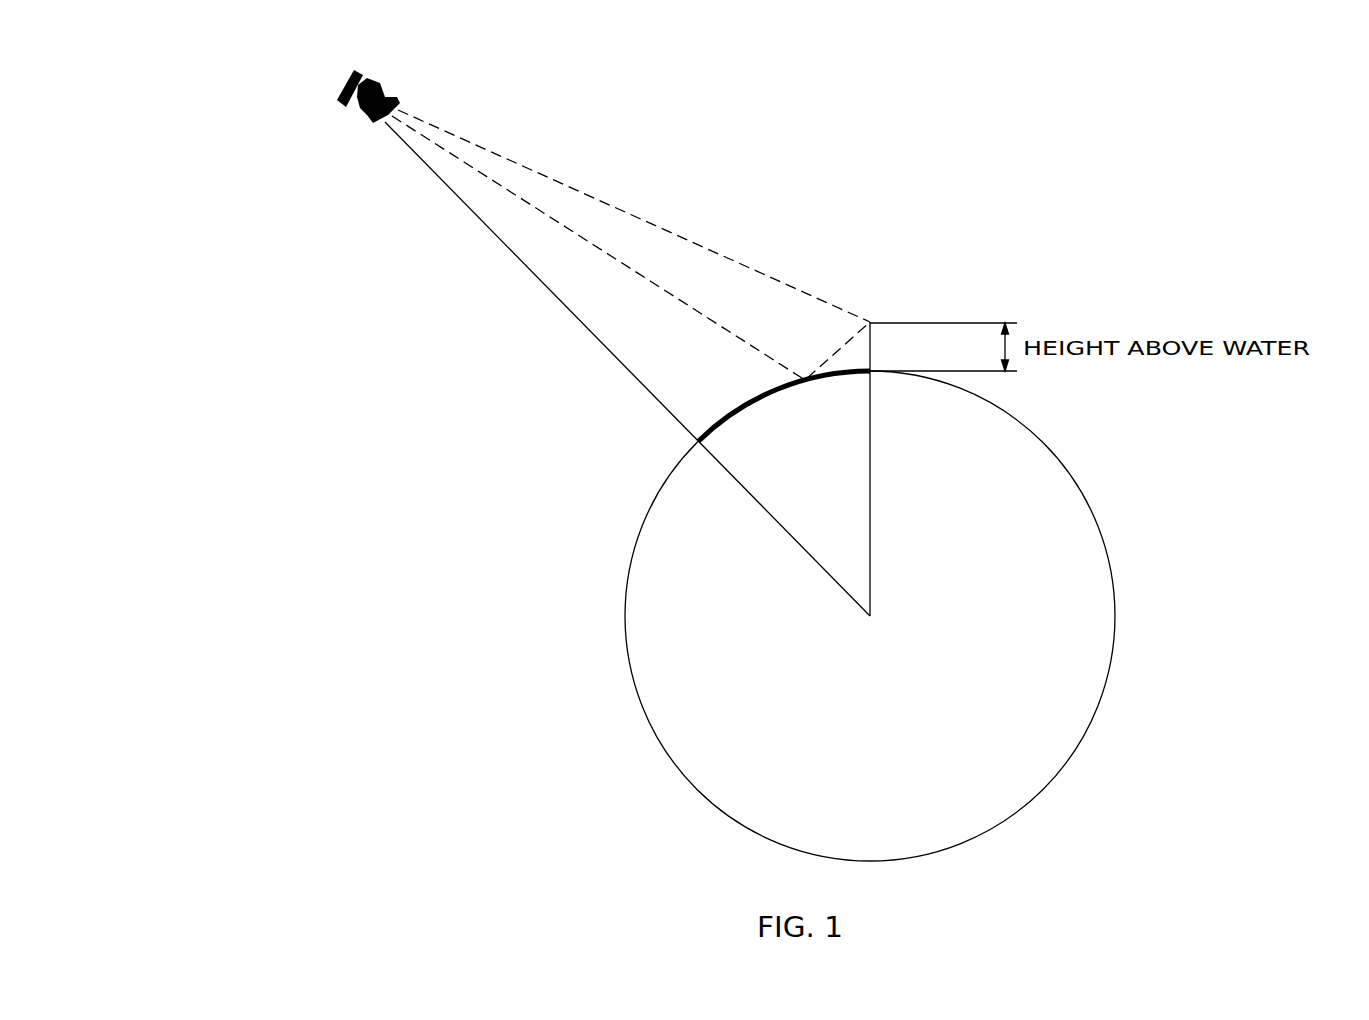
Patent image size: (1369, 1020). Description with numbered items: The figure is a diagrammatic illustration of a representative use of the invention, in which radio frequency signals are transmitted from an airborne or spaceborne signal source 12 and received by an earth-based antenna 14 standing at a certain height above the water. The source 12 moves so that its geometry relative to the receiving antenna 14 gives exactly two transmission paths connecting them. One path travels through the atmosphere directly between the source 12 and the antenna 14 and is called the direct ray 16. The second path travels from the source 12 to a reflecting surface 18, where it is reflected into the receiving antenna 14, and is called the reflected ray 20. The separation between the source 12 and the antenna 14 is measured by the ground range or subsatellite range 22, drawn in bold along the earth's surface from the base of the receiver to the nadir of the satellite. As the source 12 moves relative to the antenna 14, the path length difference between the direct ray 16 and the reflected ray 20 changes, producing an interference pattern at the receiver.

The signal source 12 is at (483, 87).
The antenna 14 is at (1060, 445).
The direct ray 16 is at (634, 212).
The reflecting surface 18 is at (528, 370).
The reflected ray 20 is at (654, 248).
The subsatellite range 22 is at (578, 409).